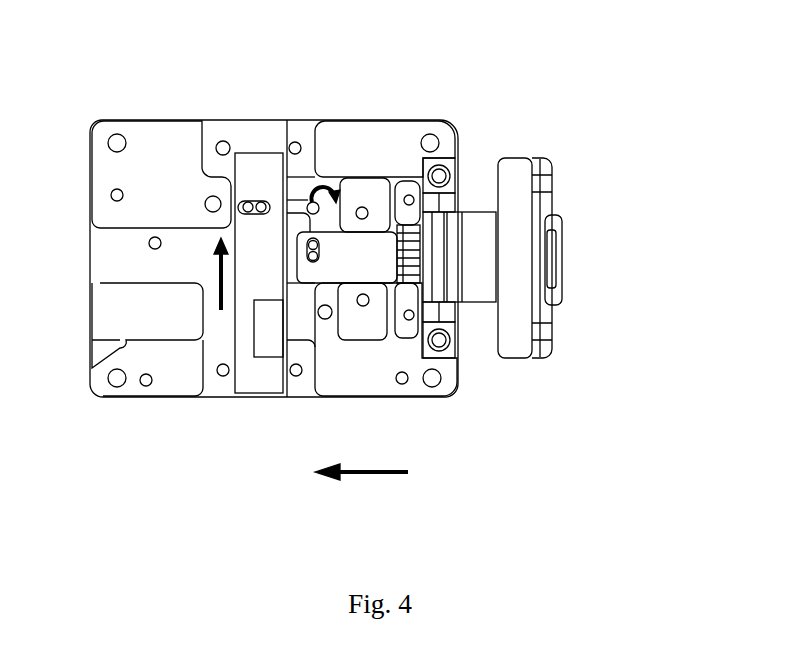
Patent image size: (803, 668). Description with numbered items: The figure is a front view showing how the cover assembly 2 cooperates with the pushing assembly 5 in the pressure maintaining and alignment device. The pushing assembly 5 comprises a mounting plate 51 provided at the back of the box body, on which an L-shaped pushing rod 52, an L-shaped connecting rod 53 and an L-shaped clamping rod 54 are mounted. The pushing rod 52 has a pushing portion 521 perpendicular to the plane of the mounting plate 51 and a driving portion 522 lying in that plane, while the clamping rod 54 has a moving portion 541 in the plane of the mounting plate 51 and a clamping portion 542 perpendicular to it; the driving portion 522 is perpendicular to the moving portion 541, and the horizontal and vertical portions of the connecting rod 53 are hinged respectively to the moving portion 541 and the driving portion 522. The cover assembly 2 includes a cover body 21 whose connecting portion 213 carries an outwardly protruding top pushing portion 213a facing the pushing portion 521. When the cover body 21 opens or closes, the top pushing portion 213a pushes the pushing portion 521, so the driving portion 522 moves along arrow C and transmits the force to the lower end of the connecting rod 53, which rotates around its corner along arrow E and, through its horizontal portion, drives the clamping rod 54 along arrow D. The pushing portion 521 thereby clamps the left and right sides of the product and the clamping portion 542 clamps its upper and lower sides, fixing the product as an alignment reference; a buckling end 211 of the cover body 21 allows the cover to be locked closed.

The pushing assembly 5 is at (362, 79).
The mounting plate 51 is at (150, 138).
The L-shaped pushing rod 52 is at (372, 318).
The L-shaped connecting rod 53 is at (310, 188).
The L-shaped clamping rod 54 is at (202, 295).
The moving portion 541 is at (267, 256).
The clamping portion 542 is at (270, 358).
The pushing portion 521 is at (406, 300).
The driving portion 522 is at (350, 278).
The connecting portion 213 is at (475, 277).
The top pushing portion 213a is at (462, 290).
The cover assembly 2 is at (580, 260).
The cover body 21 is at (550, 333).
The buckling end 211 is at (560, 248).